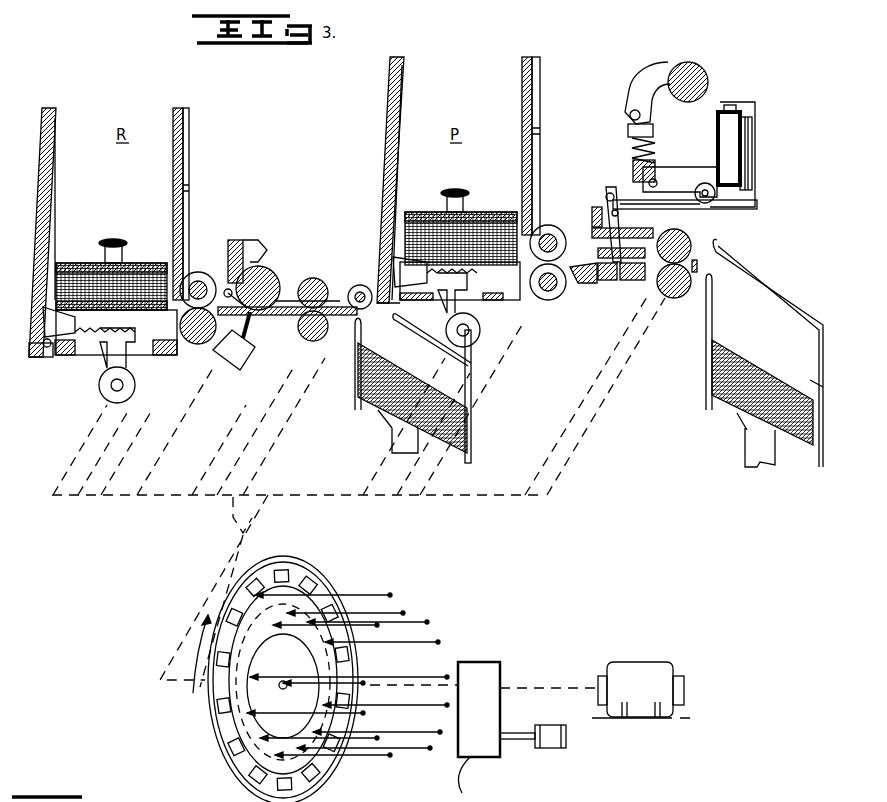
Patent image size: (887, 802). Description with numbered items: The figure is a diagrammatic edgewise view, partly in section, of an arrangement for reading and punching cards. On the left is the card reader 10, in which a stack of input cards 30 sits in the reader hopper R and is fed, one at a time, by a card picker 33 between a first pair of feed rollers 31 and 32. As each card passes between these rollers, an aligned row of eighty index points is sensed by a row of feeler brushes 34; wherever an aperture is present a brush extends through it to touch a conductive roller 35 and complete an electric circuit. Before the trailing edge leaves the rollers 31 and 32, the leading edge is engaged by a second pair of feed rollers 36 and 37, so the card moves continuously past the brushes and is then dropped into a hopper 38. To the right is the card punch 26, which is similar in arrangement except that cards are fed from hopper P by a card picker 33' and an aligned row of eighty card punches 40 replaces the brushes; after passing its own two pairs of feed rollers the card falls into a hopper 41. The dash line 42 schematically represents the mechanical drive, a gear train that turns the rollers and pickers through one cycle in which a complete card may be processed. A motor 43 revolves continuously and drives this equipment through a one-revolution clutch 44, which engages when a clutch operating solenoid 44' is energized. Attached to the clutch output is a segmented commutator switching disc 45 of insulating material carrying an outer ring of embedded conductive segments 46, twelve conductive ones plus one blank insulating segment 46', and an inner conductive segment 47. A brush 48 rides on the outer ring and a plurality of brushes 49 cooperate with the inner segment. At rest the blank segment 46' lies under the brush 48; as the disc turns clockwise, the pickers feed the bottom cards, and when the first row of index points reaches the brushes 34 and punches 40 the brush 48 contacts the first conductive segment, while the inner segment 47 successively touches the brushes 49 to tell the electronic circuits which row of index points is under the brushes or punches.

The card reader 10 is at (216, 168).
The card punch 26 is at (338, 165).
The input cards 30 is at (68, 263).
The feed roller 31 is at (202, 271).
The feed roller 32 is at (206, 345).
The card picker 33 is at (59, 349).
The card picker 33' is at (426, 238).
The feeler brushes 34 is at (255, 315).
The conductive roller 35 is at (272, 272).
The feed roller 36 is at (323, 280).
The feed roller 37 is at (318, 341).
The hopper 38 is at (403, 350).
The card punches 40 is at (590, 242).
The hopper 41 is at (765, 339).
The mechanical drive 42 is at (343, 498).
The motor 43 is at (645, 662).
The one-revolution clutch 44 is at (594, 719).
The clutch operating solenoid 44' is at (555, 753).
The switching disc 45 is at (272, 678).
The conductive segments 46 is at (262, 680).
The blank segment 46' is at (285, 528).
The inner conductive segment 47 is at (193, 663).
The brush 48 is at (372, 594).
The brushes 49 is at (437, 640).